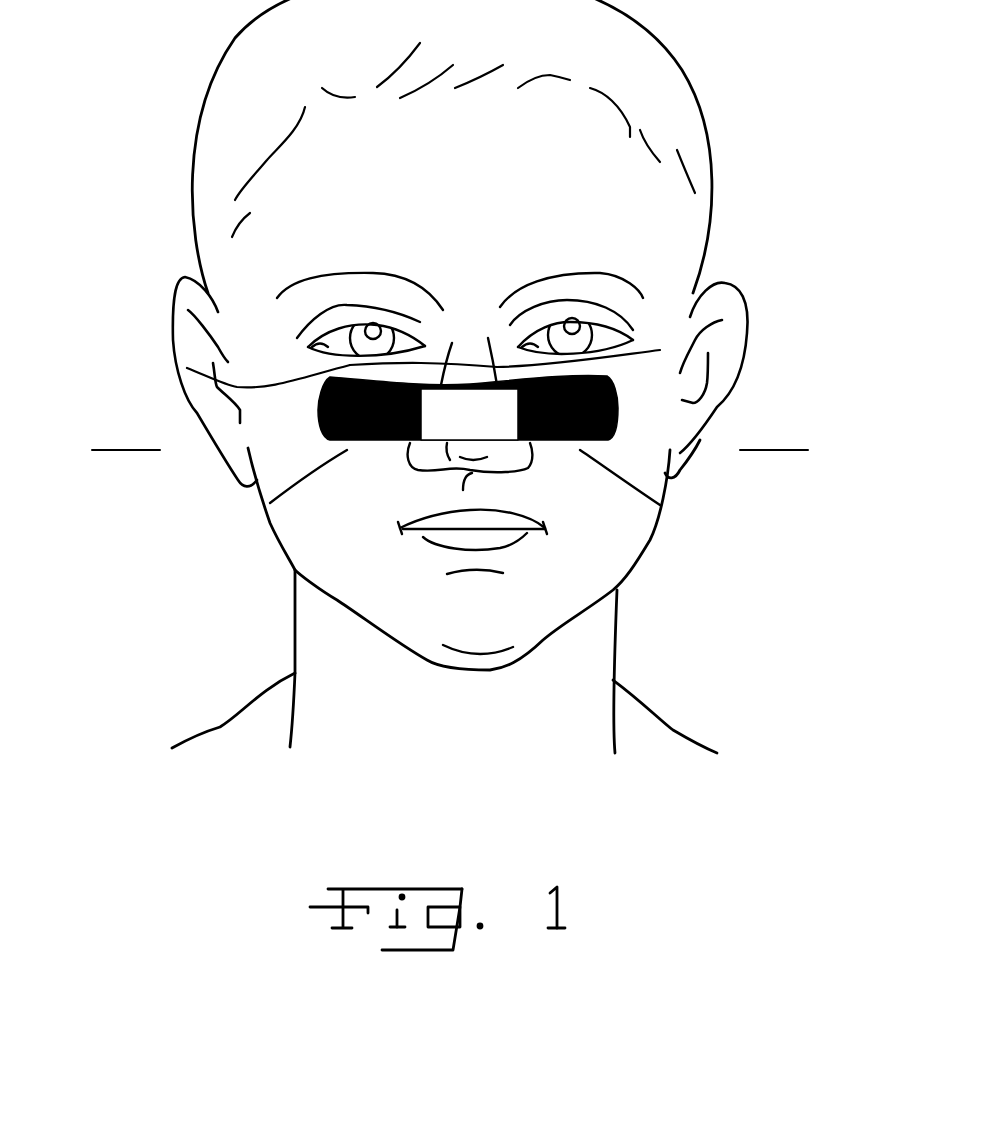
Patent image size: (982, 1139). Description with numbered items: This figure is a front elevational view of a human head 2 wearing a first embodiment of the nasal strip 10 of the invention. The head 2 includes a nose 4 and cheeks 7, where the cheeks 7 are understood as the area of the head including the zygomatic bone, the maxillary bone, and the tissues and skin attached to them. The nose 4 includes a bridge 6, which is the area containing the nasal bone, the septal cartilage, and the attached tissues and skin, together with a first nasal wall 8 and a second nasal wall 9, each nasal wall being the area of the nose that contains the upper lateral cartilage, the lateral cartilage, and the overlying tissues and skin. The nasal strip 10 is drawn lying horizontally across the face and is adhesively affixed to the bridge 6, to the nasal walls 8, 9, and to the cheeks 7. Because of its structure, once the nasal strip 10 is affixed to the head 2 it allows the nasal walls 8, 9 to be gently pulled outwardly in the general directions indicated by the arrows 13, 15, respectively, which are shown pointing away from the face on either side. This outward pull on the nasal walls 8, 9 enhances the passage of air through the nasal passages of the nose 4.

The human head 2 is at (752, 185).
The nose 4 is at (550, 466).
The bridge 6 is at (468, 368).
The cheeks 7 is at (270, 503).
The first nasal wall 8 is at (187, 368).
The second nasal wall 9 is at (660, 350).
The nasal strip 10 is at (620, 408).
The arrow 13 is at (126, 434).
The arrow 15 is at (774, 434).